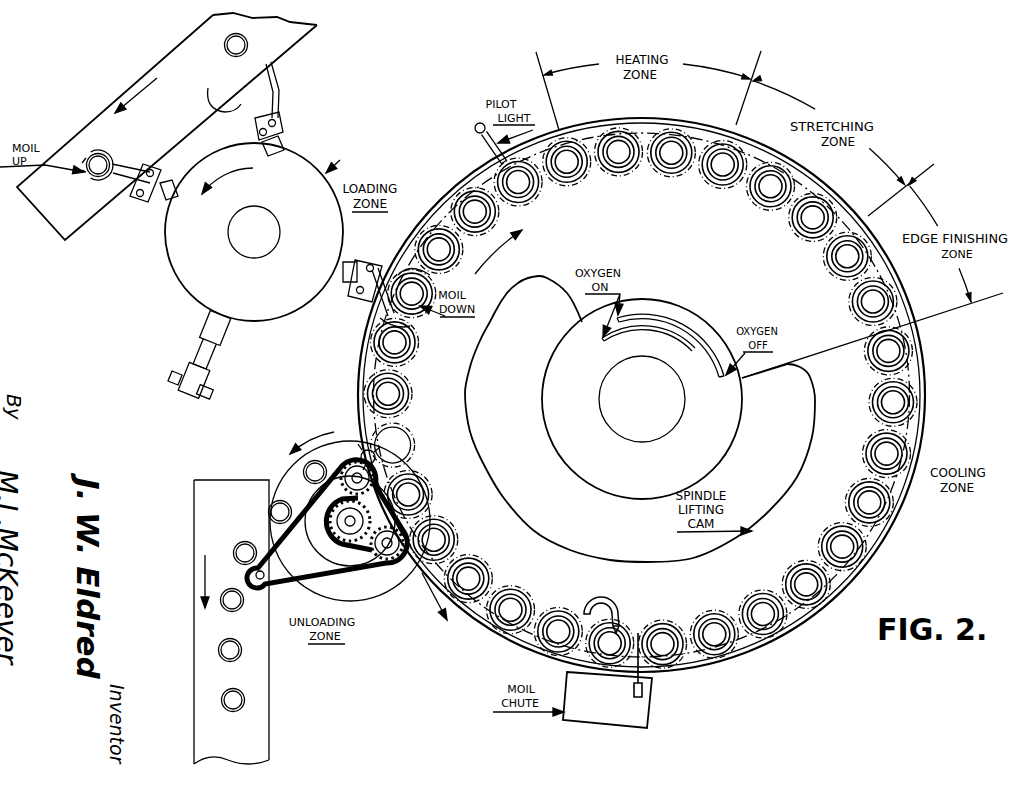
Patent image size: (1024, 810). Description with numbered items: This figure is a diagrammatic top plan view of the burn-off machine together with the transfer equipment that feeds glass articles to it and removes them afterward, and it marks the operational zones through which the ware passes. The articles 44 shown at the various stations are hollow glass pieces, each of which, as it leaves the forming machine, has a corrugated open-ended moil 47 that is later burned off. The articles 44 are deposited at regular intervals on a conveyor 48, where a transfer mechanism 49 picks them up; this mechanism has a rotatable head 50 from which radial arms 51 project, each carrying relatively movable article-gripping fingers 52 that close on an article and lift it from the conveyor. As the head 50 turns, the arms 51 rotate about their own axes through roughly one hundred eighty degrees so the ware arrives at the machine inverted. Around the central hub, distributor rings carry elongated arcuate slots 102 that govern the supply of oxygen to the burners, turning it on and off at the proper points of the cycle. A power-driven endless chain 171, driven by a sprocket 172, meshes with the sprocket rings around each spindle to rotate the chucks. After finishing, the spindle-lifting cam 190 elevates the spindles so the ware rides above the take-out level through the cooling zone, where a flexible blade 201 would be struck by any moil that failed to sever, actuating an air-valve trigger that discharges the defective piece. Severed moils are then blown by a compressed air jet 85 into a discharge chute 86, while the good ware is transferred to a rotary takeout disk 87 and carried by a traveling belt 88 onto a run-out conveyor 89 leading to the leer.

The moil (glass tube blank) 44 is at (226, 49).
The moil 47 is at (215, 395).
The conveyor 48 is at (293, 47).
The transfer mechanism 49 is at (339, 159).
The rotatable head 50 is at (190, 265).
The radial arms 51 is at (280, 147).
The article-gripping fingers 52 is at (236, 109).
The compressed air jet 85 is at (618, 605).
The discharge chute 86 is at (633, 715).
The rotary takeout disk 87 is at (383, 583).
The traveling belt 88 is at (296, 582).
The run-out conveyor 89 is at (269, 694).
The elongated arcuate slots 102 is at (682, 323).
The power-driven endless chain 171 is at (362, 448).
The sprocket 172 is at (332, 513).
The spindle-lifting cam plate 190 is at (527, 517).
The flexible blade 201 is at (634, 655).